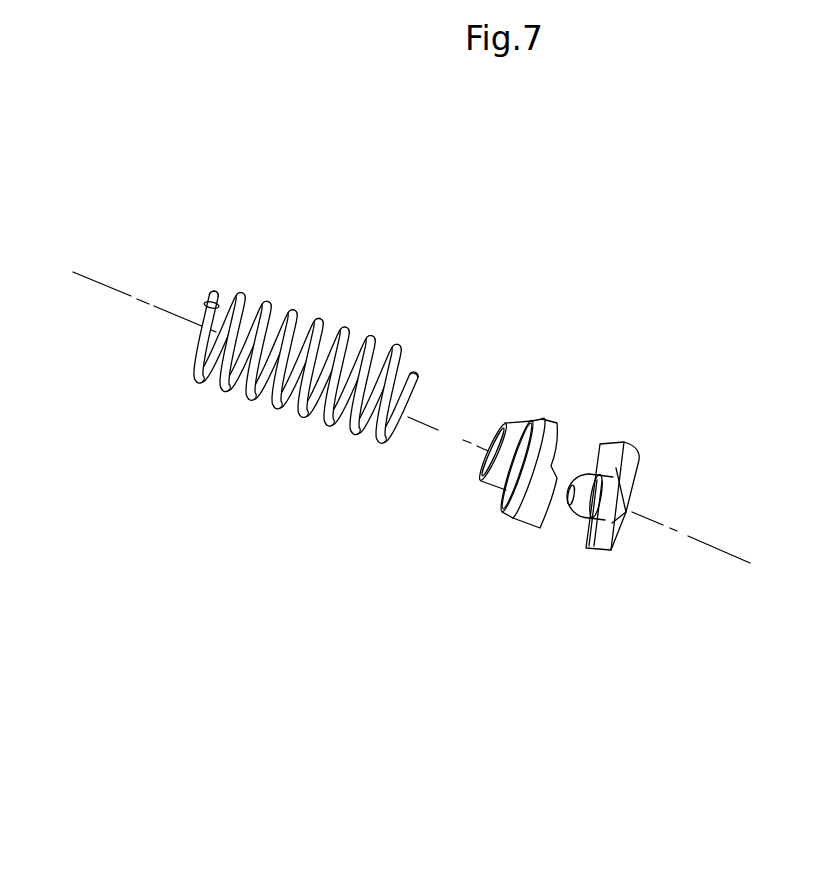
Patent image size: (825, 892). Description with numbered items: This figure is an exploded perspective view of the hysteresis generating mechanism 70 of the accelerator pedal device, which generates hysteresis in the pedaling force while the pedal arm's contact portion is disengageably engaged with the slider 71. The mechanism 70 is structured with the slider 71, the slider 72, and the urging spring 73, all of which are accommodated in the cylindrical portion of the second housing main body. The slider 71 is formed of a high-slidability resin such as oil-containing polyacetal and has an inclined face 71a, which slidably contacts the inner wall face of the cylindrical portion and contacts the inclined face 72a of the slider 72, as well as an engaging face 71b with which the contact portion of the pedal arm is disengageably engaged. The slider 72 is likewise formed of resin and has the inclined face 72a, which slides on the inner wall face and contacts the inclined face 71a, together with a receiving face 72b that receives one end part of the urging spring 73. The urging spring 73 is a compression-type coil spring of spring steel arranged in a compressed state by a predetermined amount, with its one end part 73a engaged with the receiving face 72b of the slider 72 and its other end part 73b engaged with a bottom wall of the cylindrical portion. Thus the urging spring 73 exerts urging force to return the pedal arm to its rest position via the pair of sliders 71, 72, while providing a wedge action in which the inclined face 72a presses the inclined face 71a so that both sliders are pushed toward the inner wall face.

The hysteresis generating mechanism 70 is at (514, 279).
The slider 71 is at (651, 470).
The inclined face 71a is at (612, 463).
The engaging face 71b is at (640, 486).
The slider 72 is at (552, 411).
The inclined face 72a is at (556, 422).
The receiving face 72b is at (503, 502).
The urging spring 73 is at (337, 309).
The one end part 73a is at (415, 377).
The other end part 73b is at (214, 289).